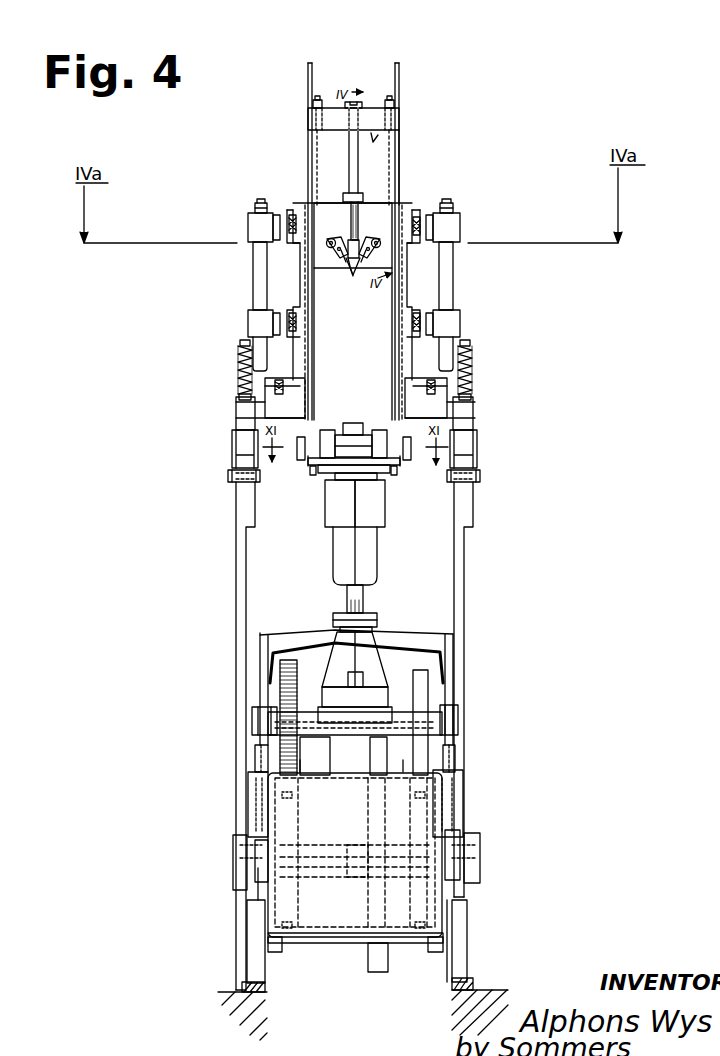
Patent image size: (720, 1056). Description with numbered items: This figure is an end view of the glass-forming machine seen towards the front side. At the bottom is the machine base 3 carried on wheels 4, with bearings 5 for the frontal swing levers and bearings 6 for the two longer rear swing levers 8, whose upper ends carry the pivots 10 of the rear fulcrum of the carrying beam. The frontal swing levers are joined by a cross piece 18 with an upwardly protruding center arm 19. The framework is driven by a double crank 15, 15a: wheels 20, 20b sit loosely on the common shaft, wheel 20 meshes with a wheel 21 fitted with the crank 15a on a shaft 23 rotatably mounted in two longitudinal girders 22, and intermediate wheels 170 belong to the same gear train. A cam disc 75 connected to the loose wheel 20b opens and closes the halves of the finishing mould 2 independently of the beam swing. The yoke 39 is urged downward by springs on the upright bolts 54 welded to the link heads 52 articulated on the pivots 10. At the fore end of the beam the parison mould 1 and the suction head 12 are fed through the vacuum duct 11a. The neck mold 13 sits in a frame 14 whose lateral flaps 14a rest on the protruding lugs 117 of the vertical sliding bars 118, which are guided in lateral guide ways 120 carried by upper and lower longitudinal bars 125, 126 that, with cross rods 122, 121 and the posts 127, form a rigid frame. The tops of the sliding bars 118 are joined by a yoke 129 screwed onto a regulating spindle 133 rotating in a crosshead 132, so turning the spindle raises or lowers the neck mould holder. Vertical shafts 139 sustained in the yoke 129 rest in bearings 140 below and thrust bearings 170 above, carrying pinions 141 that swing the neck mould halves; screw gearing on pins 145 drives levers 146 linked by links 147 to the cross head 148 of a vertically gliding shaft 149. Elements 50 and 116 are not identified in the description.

The parison mould 1 is at (363, 563).
The finishing mould 2 is at (345, 655).
The machine base 3 is at (327, 912).
The wheels 4 is at (252, 947).
The bearings 5 is at (258, 866).
The bearings / common shaft 6 is at (236, 850).
The rear swing levers 8 is at (240, 558).
The pivots 10 is at (230, 476).
The vacuum duct 11a is at (396, 458).
The suction head 12 is at (354, 448).
The neck mold 13 is at (340, 503).
The frame 14 is at (370, 503).
The flaps 14a is at (322, 468).
The double crank 15 is at (455, 712).
The crank 15a is at (256, 721).
The cross piece 18 is at (412, 638).
The center arm 19 is at (366, 606).
The wheel 20 is at (290, 808).
The loose wheel 20b is at (473, 787).
The wheel 21 is at (285, 692).
The longitudinal girders 22 is at (403, 760).
The shaft 23 is at (392, 727).
The yoke 39 is at (455, 408).
The nut 50 is at (279, 379).
The link heads 52 is at (246, 446).
The upright bolts 54 is at (240, 375).
The cam disc 75 is at (378, 958).
The plate 116 is at (320, 455).
The protruding lugs 117 is at (320, 466).
The vertical sliding bars 118 is at (396, 68).
The guide ways 120 is at (308, 297).
The cross rod 121 is at (258, 320).
The cross rod 122 is at (258, 225).
The upper longitudinal bar 125 is at (290, 215).
The lower longitudinal bar 126 is at (290, 322).
The post 127 is at (260, 265).
The yoke 129 is at (310, 120).
The crosshead 132 is at (330, 222).
The regulating spindle 133 is at (400, 136).
The vertical shafts 139 is at (351, 175).
The bearings 140 is at (392, 432).
The pinions 141 is at (311, 470).
The pins 145 is at (329, 246).
The levers 146 is at (325, 250).
The links 147 is at (338, 247).
The cross head 148 is at (352, 260).
The vertically gliding shaft 149 is at (358, 222).
The thrust bearings 170 is at (388, 98).